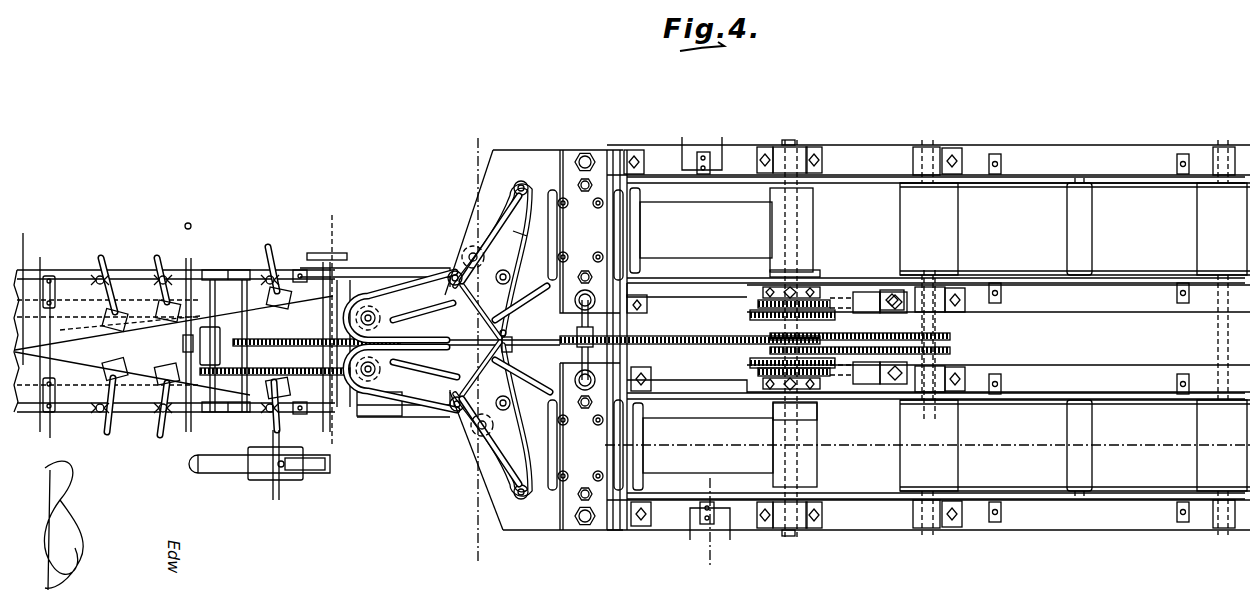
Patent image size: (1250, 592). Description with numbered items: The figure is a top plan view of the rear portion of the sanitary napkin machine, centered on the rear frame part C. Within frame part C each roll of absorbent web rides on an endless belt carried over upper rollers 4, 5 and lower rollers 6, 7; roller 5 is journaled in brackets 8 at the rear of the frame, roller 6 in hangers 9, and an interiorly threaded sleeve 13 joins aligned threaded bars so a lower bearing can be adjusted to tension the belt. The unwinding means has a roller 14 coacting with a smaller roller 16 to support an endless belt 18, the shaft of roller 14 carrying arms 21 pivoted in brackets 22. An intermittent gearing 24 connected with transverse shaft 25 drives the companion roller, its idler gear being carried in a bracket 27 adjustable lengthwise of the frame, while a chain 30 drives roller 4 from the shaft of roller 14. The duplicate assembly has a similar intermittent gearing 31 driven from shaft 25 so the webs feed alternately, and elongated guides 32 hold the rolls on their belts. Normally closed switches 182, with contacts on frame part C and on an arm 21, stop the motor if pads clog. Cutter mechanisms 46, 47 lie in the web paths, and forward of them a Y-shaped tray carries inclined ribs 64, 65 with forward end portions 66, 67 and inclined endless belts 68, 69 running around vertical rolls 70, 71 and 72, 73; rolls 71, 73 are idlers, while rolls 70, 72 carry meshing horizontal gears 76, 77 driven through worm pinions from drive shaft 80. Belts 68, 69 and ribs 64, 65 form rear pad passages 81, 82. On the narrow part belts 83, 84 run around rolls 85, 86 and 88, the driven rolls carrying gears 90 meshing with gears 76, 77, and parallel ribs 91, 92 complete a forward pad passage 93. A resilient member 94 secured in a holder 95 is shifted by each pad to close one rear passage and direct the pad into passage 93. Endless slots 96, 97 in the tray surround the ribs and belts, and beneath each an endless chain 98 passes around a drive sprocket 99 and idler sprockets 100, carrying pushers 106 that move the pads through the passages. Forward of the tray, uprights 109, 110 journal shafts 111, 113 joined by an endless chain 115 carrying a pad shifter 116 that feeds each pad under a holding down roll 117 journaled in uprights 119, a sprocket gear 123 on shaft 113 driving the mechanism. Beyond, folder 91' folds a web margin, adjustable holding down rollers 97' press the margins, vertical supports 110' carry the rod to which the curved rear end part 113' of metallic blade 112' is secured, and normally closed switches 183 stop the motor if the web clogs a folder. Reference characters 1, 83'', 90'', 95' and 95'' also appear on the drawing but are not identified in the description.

The section line 1 is at (481, 137).
The upper roller 4 is at (950, 183).
The upper roller 5 is at (1247, 185).
The lower roller 6 is at (174, 315).
The lower roller 7 is at (495, 552).
The brackets 8 is at (346, 212).
The hangers 9 is at (1092, 222).
The interiorly threaded sleeve 13 is at (710, 503).
The roller 14 is at (831, 186).
The roller 16 is at (642, 190).
The endless belt 18 is at (927, 337).
The arms 21 is at (737, 175).
The brackets 22 is at (646, 150).
The intermittent gearing 24 is at (872, 385).
The shaft 25 is at (810, 334).
The bracket 27 is at (903, 392).
The chain 30 is at (900, 352).
The intermittent gearing 31 is at (868, 292).
The elongated guides 32 is at (1130, 178).
The cutter mechanism 46 is at (597, 155).
The cutter mechanism 47 is at (600, 524).
The inclined rib 64 is at (498, 220).
The inclined rib 65 is at (468, 412).
The forward end portion 66 is at (448, 276).
The forward end portion 67 is at (445, 408).
The endless travelling belt 68 is at (545, 230).
The endless travelling belt 69 is at (512, 385).
The roll 70 is at (535, 310).
The idler roll 71 is at (530, 292).
The roll 72 is at (515, 349).
The idler roll 73 is at (520, 461).
The gear 76 is at (576, 333).
The gear 77 is at (560, 353).
The drive shaft 80 is at (463, 273).
The rear pad passage 81 is at (530, 232).
The rear pad passage 82 is at (500, 420).
The endless travelling belt 83 is at (418, 282).
The endless travelling belt 84 is at (425, 374).
The idler roll 85 is at (392, 300).
The roll 86 is at (427, 293).
The roll 88 is at (420, 396).
The gears 90 is at (525, 344).
The rib 91 is at (349, 255).
The rib 92 is at (375, 342).
The forward pad passage 93 is at (388, 300).
The resilient alternately shiftable wall forming and pad directing member 94 is at (440, 373).
The holder 95 is at (523, 330).
The endless slot 96 is at (498, 193).
The endless slot 97 is at (510, 495).
The endless chain 98 is at (517, 188).
The drive sprocket 99 is at (472, 252).
The idler sprockets 100 is at (521, 181).
The pusher 106 is at (527, 207).
The uprights 109 is at (246, 270).
The uprights 110 is at (294, 339).
The shaft 111 is at (230, 346).
The shaft 113 is at (269, 360).
The endless chain 115 is at (333, 412).
The pad shifter 116 is at (300, 357).
The holding down roll 117 is at (212, 346).
The uprights 119 is at (190, 258).
The sprocket gear 123 is at (320, 267).
The normally closed switches 182 is at (703, 155).
The normally closed switches 183 is at (46, 278).
The rear frame part C is at (1057, 145).
The shaft 83'' is at (690, 349).
The lever 90'' is at (79, 298).
The folder 91' is at (59, 263).
The pin 95' is at (235, 397).
The pin 95'' is at (226, 259).
The holding down rollers 97' is at (129, 336).
The vertical supports 110' is at (177, 331).
The metallic blade 112' is at (88, 245).
The upstanding curved reduced rear end part 113' is at (133, 242).